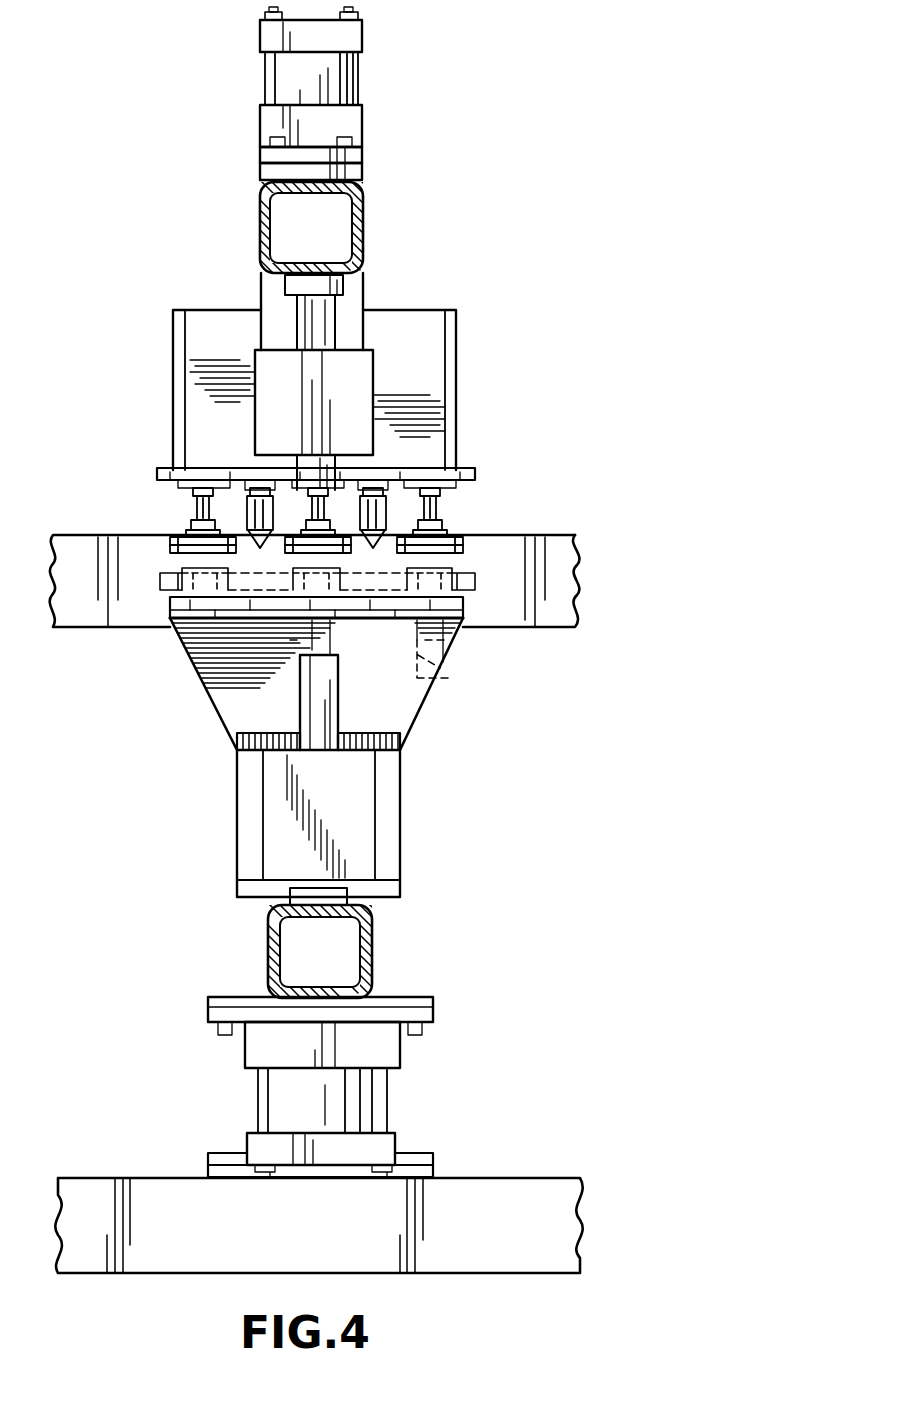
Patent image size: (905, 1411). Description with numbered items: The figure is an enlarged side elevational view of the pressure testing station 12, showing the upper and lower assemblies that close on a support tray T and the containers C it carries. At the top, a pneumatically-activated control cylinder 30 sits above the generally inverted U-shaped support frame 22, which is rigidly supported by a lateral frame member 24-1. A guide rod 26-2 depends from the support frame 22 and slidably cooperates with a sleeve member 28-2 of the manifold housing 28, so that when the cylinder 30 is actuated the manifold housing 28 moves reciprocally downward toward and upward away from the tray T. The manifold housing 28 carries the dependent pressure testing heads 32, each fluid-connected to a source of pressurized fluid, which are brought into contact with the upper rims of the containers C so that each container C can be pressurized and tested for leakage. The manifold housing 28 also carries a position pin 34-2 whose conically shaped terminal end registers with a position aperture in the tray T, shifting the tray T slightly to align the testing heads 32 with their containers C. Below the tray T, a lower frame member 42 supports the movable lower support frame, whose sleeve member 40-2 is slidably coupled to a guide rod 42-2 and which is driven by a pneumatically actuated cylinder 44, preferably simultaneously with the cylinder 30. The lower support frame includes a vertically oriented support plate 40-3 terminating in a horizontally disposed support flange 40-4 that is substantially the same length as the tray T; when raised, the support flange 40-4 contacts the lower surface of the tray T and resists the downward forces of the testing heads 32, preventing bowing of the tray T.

The pick and place mechanism 12 is at (565, 157).
The control cylinder 30 is at (290, 75).
The support frame 22 is at (363, 203).
The guide rod 26-2 is at (308, 313).
The manifold housing 28 is at (415, 338).
The sleeve member 28-2 is at (276, 362).
The pressure testing heads 32 is at (188, 513).
The position pin 34-2 is at (250, 508).
The lateral frame member 24-1 is at (560, 556).
The support tray T is at (470, 582).
The support flange 40-4 is at (177, 604).
The container C is at (222, 662).
The guide rod 42-2 is at (312, 702).
The support plate 40-3 is at (402, 752).
The sleeve member 40-2 is at (350, 787).
The lower frame member 42 is at (372, 928).
The cylinder 44 is at (318, 1115).